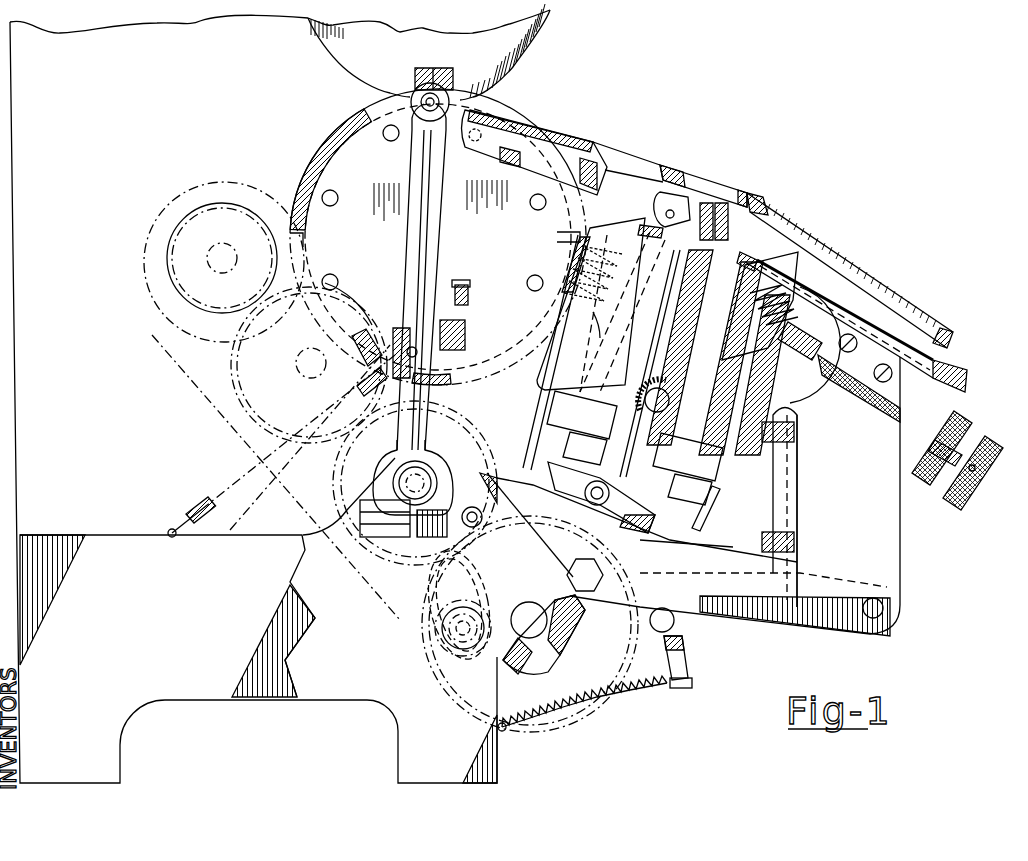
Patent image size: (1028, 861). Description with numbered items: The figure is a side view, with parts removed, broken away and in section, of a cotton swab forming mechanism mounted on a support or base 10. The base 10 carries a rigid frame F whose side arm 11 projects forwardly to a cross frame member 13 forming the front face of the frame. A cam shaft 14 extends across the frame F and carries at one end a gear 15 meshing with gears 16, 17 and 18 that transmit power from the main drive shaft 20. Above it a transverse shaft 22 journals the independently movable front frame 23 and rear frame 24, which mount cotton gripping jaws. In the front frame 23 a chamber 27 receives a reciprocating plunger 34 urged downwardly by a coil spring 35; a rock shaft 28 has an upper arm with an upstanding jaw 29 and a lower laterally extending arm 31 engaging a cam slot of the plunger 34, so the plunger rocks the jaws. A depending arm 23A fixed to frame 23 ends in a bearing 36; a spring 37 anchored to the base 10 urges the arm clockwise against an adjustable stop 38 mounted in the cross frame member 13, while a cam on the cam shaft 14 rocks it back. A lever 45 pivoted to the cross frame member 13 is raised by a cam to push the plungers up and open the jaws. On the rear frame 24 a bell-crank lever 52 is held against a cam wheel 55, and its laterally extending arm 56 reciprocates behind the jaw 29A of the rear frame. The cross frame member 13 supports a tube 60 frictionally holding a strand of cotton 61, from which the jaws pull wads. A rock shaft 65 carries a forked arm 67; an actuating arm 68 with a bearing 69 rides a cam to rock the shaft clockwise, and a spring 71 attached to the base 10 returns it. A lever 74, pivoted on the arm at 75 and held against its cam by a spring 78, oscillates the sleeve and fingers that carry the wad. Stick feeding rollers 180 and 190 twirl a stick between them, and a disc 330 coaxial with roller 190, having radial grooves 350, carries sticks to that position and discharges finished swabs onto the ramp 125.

The support or base 10 is at (253, 399).
The side arm 11 is at (774, 511).
The cross frame member 13 is at (735, 496).
The cam shaft 14 is at (553, 616).
The gear 15 is at (530, 624).
The gear 16 is at (415, 483).
The gear 17 is at (309, 363).
The gear 18 is at (224, 262).
The main drive shaft 20 is at (222, 258).
The transverse shaft 22 is at (650, 415).
The front frame 23 is at (780, 303).
The depending arm 23A is at (686, 516).
The rear frame 24 is at (597, 228).
The chamber 27 is at (750, 303).
The rock shaft 28 is at (687, 352).
The upstanding jaw 29 is at (726, 221).
The jaw 29A is at (697, 180).
The laterally extending arm 31 is at (635, 448).
The reciprocating plunger 34 is at (528, 440).
The coil spring 35 is at (610, 248).
The bearing 36 is at (690, 632).
The spring 37 is at (640, 688).
The adjustable stop 38 is at (812, 362).
The lever 45 is at (638, 537).
The bell-crank lever 52 is at (670, 298).
The cam wheel 55 is at (558, 497).
The laterally extending arm 56 is at (662, 196).
The tube 60 is at (917, 337).
The strand of cotton 61 is at (760, 252).
The rock shaft 65 is at (406, 488).
The forked arm 67 is at (410, 258).
The actuating arm 68 is at (470, 571).
The bearing 69 is at (455, 600).
The spring 71 is at (200, 505).
The lever 74 is at (440, 217).
The pivot 75 is at (466, 330).
The spring 78 is at (470, 292).
The ramp 125 is at (630, 166).
The roller 180 is at (429, 52).
The roller 190 is at (330, 156).
The disc 330 is at (372, 112).
The radial groove 350 is at (335, 140).
The rigid frame F is at (779, 496).